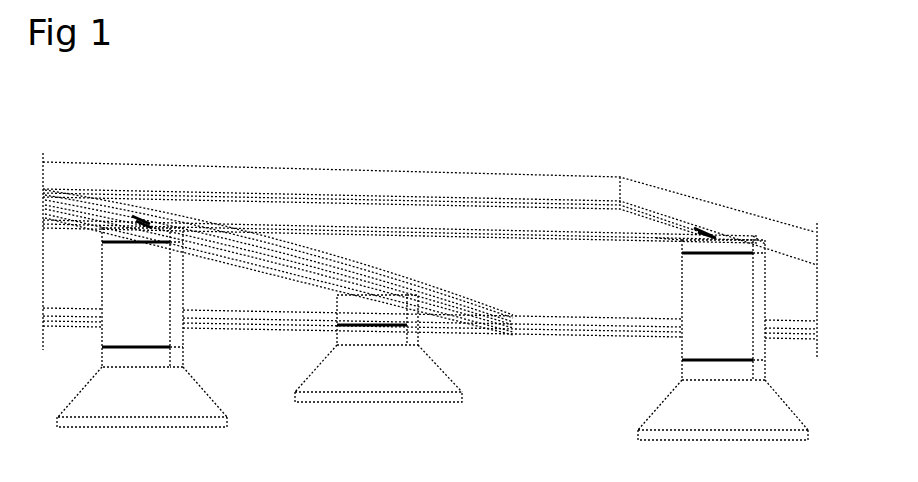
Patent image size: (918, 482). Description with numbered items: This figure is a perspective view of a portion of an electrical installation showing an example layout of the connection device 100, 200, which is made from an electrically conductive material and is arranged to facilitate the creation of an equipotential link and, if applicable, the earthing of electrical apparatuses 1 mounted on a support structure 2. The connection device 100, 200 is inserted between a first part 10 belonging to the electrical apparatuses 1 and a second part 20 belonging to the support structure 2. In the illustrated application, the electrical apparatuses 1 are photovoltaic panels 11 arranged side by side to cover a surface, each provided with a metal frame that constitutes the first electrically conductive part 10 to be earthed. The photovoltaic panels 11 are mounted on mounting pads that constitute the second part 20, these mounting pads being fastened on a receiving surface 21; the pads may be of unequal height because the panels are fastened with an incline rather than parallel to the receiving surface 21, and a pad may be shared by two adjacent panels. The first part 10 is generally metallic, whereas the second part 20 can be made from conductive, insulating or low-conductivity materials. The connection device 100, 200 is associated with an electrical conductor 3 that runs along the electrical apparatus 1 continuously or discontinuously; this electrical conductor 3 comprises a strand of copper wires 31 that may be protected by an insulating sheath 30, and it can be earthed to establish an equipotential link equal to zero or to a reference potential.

The electrical apparatus 1 is at (430, 274).
The support structure 2 is at (432, 278).
The electrical conductor 3 is at (260, 226).
The first part 10 is at (430, 239).
The photovoltaic panel 11 is at (212, 297).
The second part 20 is at (112, 272).
The receiving surface 21 is at (545, 390).
The insulating sheath 30 is at (660, 240).
The strand of copper wires 31 is at (763, 240).
The connection device 100 is at (142, 228).
The connection device 200 is at (704, 231).